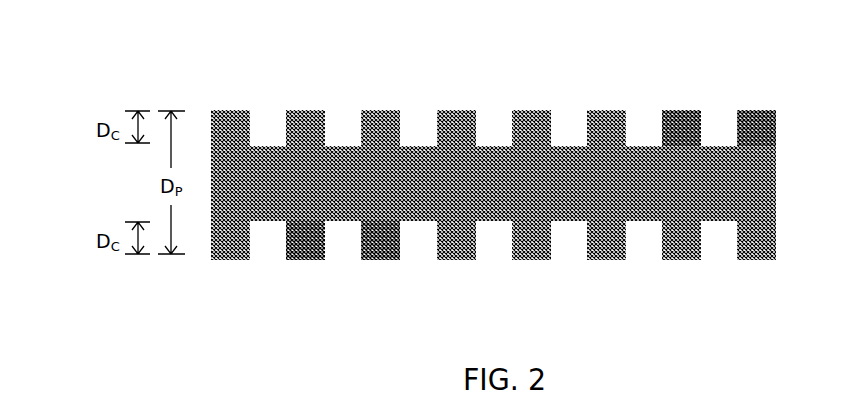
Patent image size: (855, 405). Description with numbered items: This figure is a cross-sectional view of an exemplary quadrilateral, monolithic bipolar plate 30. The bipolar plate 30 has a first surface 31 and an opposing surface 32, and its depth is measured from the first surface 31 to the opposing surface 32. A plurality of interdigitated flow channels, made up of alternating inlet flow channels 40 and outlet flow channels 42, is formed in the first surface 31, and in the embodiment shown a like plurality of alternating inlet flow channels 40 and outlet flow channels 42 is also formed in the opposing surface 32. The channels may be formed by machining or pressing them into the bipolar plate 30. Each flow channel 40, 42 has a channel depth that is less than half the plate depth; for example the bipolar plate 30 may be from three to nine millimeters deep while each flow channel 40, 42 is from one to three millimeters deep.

The monolithic bipolar plate 30 is at (370, 74).
The first surface 31 is at (525, 102).
The opposing surface 32 is at (673, 252).
The inlet flow channel 40 is at (634, 118).
The outlet flow channel 42 is at (712, 110).